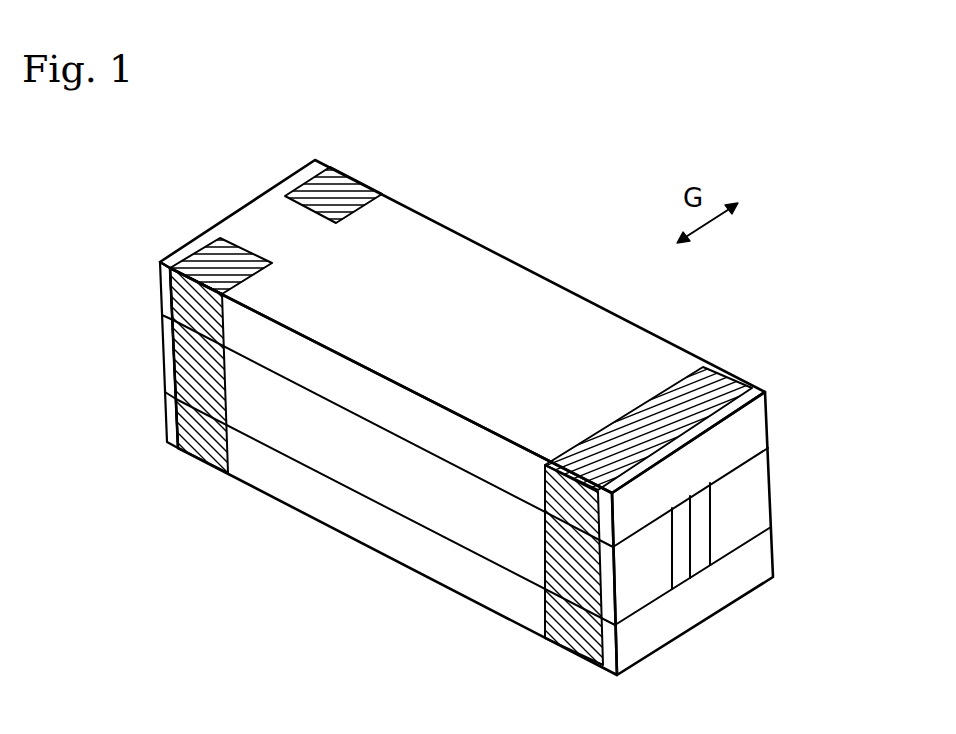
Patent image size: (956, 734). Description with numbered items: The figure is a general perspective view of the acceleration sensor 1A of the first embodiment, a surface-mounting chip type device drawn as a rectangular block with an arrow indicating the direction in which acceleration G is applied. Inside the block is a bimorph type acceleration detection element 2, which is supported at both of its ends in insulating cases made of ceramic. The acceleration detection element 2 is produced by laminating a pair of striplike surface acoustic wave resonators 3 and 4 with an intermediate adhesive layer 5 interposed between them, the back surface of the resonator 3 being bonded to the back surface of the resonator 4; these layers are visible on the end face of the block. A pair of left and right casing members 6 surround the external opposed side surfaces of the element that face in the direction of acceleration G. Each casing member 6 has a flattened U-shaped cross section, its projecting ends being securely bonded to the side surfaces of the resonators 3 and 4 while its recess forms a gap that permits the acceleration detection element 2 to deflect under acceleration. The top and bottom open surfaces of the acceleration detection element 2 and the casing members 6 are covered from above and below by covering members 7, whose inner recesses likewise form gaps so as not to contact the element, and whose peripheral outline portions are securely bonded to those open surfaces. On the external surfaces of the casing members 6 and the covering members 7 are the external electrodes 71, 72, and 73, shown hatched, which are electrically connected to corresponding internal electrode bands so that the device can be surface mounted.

The acceleration sensor 1A is at (537, 257).
The acceleration detection element 2 is at (793, 641).
The surface acoustic wave resonator 3 is at (683, 577).
The surface acoustic wave resonator 4 is at (710, 557).
The intermediate adhesive layer 5 is at (693, 530).
The casing member 6 is at (770, 463).
The covering member 7 is at (427, 238).
The external electrode 71 is at (715, 372).
The external electrode 72 is at (338, 168).
The external electrode 73 is at (207, 257).